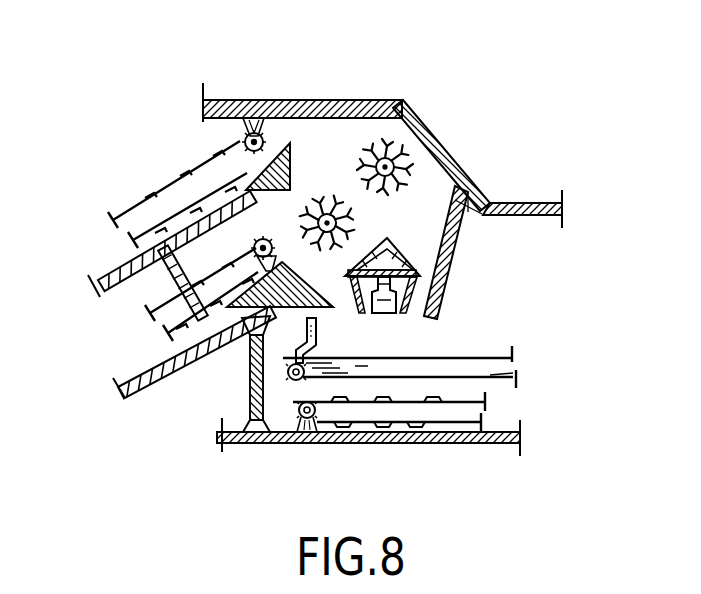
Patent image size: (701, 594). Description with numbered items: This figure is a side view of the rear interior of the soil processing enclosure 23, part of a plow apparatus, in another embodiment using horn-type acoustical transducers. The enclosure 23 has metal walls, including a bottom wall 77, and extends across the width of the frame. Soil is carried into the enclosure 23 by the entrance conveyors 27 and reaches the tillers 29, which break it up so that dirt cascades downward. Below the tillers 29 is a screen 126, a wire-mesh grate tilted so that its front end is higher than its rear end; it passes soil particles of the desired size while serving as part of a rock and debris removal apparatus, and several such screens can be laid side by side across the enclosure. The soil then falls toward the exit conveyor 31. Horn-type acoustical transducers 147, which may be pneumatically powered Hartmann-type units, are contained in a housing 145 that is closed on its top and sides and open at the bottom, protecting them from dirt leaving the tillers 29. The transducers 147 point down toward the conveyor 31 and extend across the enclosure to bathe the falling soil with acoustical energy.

The soil processing enclosure 23 is at (327, 100).
The tillers 29 is at (398, 153).
The entrance conveyors 27 is at (170, 190).
The bottom wall 77 is at (243, 441).
The housing 145 is at (392, 257).
The horn-type acoustical transducers 147 is at (395, 297).
The screen 126 is at (490, 373).
The exit conveyor 31 is at (447, 427).